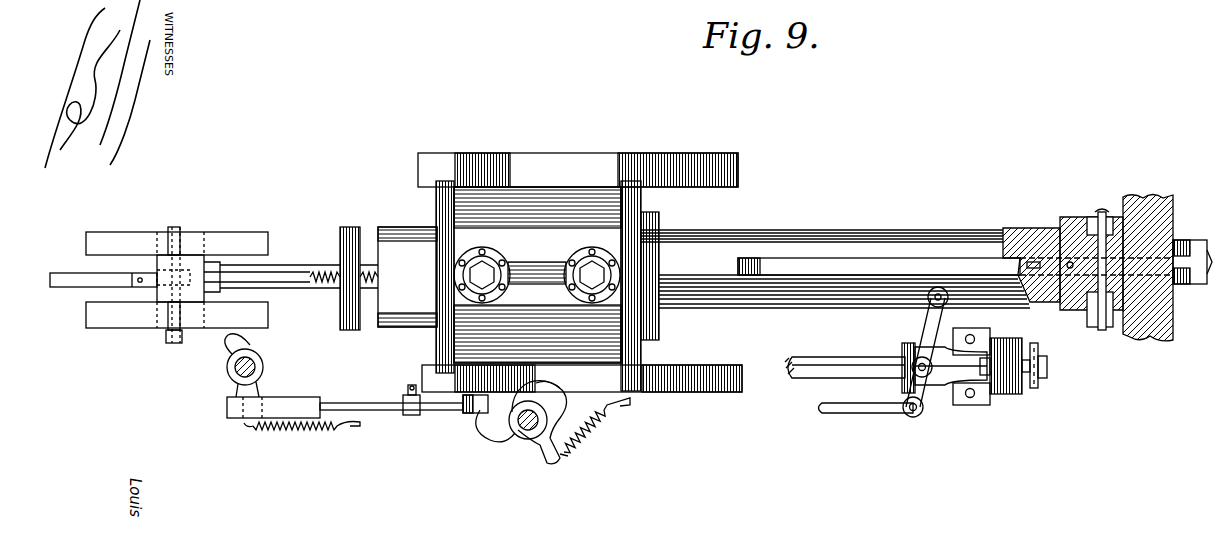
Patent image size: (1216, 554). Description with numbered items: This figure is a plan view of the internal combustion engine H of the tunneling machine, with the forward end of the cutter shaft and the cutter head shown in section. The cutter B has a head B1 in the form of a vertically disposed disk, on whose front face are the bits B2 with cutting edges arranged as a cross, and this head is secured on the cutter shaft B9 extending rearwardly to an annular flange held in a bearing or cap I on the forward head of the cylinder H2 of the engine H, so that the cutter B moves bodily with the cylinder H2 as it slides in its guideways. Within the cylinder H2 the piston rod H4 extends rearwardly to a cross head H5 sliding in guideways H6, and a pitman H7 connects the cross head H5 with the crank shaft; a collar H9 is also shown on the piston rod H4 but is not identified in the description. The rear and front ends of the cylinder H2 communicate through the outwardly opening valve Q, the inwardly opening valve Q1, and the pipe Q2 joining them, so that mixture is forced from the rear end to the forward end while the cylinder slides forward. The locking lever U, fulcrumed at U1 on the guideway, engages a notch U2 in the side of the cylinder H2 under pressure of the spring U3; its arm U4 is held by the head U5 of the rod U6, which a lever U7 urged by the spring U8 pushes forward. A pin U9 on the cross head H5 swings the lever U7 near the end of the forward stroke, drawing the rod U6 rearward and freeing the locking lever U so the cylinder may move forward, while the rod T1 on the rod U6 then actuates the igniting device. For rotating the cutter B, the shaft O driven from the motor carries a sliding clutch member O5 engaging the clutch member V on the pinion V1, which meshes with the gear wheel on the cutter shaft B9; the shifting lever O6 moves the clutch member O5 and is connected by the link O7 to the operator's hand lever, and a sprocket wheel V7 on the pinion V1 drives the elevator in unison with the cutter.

The internal combustion engine H is at (580, 257).
The cylinder H2 is at (545, 200).
The piston rod H4 is at (305, 270).
The cross head H5 is at (195, 262).
The guideways H6 is at (112, 322).
The pitman H7 is at (61, 288).
The knurled collar H9 is at (401, 238).
The bearing or cap I is at (660, 226).
The valve Q is at (481, 259).
The valve Q1 is at (598, 258).
The pipe Q2 is at (548, 272).
The cutter B is at (1088, 249).
The head B1 is at (1158, 210).
The bits B2 is at (1192, 246).
The cutter shaft B9 is at (875, 232).
The shaft O is at (830, 364).
The clutch member O5 is at (951, 375).
The shifting lever O6 is at (930, 321).
The link O7 is at (853, 411).
The clutch member V is at (992, 345).
The pinion V1 is at (1006, 390).
The sprocket wheel V7 is at (1038, 346).
The locking lever U is at (553, 409).
The fulcrum U1 is at (527, 422).
The notch U2 is at (560, 390).
The spring U3 is at (590, 433).
The arm U4 is at (488, 434).
The head U5 is at (474, 413).
The rod U6 is at (371, 395).
The lever U7 is at (260, 373).
The spring U8 is at (290, 426).
The pin U9 is at (175, 344).
The rod T1 is at (411, 389).